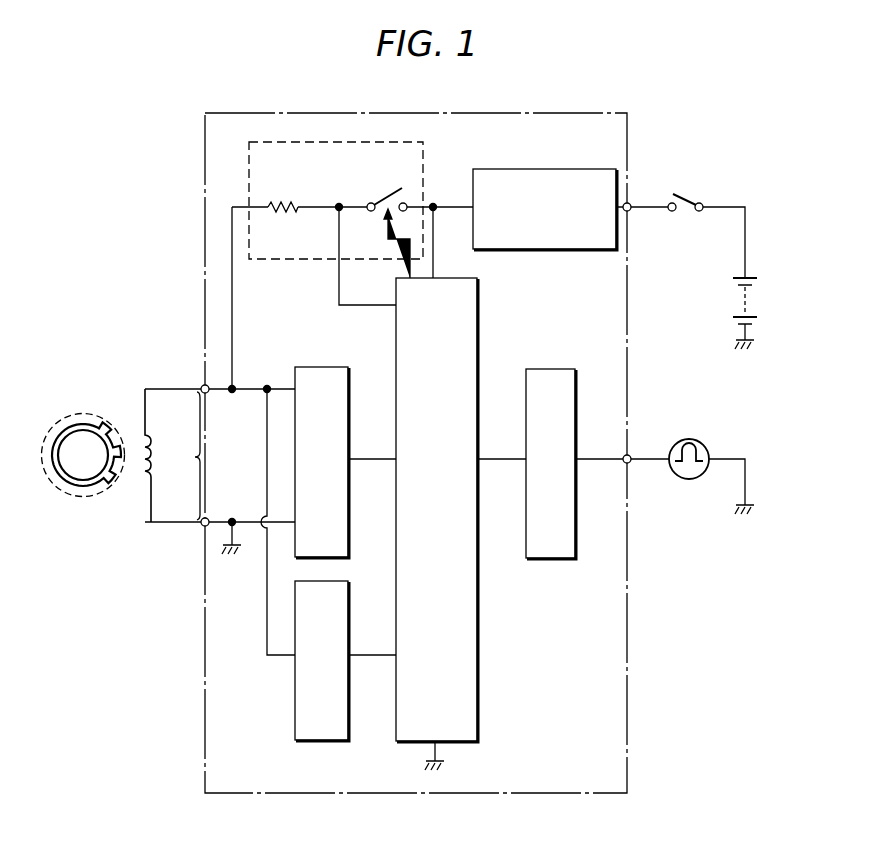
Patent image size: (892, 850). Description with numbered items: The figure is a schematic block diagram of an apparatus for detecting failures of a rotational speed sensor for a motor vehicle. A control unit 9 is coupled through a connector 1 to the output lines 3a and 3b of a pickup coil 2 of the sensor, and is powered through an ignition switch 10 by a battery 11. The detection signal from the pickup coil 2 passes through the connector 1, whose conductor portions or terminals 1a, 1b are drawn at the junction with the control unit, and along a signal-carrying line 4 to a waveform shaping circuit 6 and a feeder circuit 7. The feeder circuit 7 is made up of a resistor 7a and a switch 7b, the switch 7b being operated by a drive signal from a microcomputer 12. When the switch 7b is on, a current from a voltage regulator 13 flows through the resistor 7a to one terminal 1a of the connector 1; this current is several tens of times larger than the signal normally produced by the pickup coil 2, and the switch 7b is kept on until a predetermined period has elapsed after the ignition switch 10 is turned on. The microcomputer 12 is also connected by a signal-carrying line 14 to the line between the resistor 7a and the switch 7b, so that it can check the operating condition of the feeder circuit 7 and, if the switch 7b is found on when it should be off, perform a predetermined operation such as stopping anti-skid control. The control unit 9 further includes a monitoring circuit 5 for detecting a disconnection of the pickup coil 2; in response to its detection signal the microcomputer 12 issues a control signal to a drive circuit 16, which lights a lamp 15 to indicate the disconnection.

The connector 1 is at (190, 456).
The conductor portion 1a is at (203, 386).
The terminal 1b is at (208, 528).
The pickup coil 2 is at (143, 480).
The output line 3a is at (166, 388).
The output line 3b is at (158, 524).
The signal-carrying line 4 is at (252, 388).
The monitoring circuit 5 is at (350, 588).
The waveform shaping circuit 6 is at (350, 375).
The feeder circuit 7 is at (425, 158).
The resistor 7a is at (277, 205).
The switch 7b is at (372, 202).
The control unit 9 is at (627, 150).
The ignition switch 10 is at (685, 197).
The battery 11 is at (738, 302).
The microcomputer 12 is at (477, 317).
The voltage regulator 13 is at (594, 169).
The signal-carrying line 14 is at (339, 283).
The lamp 15 is at (688, 438).
The drive circuit 16 is at (576, 378).